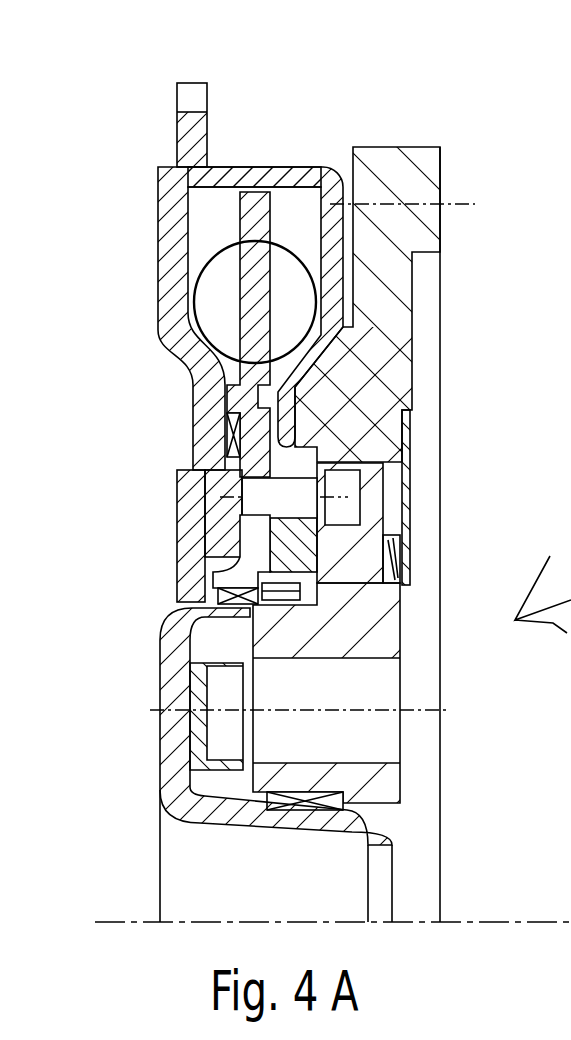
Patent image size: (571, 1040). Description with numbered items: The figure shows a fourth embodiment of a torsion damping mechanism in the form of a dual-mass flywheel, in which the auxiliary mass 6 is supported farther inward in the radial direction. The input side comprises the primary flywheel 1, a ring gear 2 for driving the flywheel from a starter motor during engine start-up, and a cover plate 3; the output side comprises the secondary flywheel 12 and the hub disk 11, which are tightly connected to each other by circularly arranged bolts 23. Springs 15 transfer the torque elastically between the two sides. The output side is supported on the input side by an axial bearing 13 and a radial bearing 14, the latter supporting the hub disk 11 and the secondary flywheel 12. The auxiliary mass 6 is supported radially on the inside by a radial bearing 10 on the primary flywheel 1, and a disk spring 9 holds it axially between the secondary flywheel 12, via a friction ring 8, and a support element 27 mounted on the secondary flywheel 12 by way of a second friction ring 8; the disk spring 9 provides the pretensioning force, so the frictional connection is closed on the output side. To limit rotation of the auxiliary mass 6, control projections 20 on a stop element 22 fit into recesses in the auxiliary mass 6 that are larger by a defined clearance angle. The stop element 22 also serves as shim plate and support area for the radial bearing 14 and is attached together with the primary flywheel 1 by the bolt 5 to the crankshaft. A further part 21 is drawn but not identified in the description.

The primary flywheel 1 is at (180, 211).
The ring gear 2 is at (190, 131).
The cover plate 3 is at (293, 176).
The bolt 5 is at (227, 733).
The auxiliary mass 6 is at (360, 498).
The friction ring 8 is at (405, 540).
The disk spring 9 is at (405, 562).
The radial bearing 10 is at (330, 798).
The hub disk 11 is at (260, 451).
The secondary flywheel 12 is at (415, 191).
The axial bearing 13 is at (222, 424).
The radial bearing 14 is at (248, 594).
The springs 15 is at (205, 263).
The control projections 20 is at (260, 606).
The ring 21 is at (290, 592).
The stop element 22 is at (198, 643).
The bolts 23 is at (290, 487).
The support element 27 is at (408, 470).